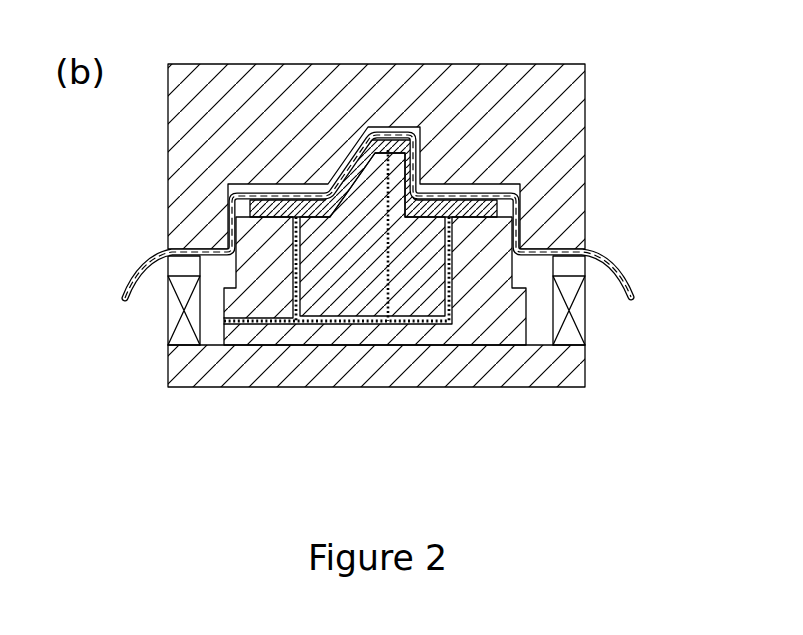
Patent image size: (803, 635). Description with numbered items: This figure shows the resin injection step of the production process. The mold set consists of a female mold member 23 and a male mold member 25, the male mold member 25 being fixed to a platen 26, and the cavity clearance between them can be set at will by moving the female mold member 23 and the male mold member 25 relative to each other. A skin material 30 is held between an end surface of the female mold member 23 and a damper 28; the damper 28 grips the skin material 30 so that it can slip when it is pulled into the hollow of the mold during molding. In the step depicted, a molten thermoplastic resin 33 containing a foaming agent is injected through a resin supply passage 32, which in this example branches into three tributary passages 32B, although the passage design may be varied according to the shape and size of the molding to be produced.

The female mold member 23 is at (577, 106).
The male mold member 25 is at (503, 330).
The platen 26 is at (575, 370).
The damper 28 is at (578, 312).
The skin material 30 is at (612, 266).
The resin supply passage 32 is at (348, 327).
The tributary passages 32B is at (295, 277).
The molten thermoplastic resin 33 is at (385, 133).